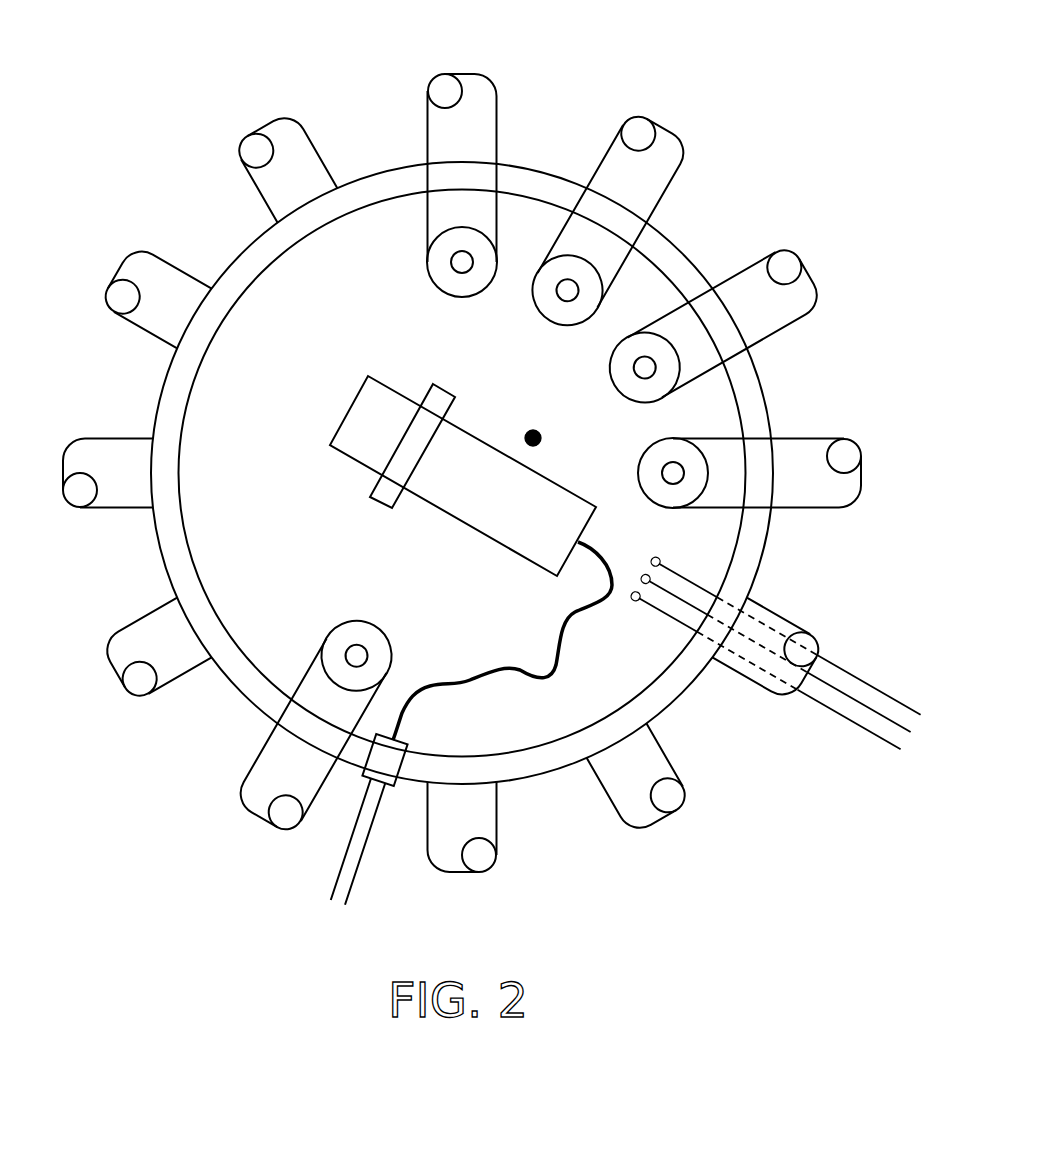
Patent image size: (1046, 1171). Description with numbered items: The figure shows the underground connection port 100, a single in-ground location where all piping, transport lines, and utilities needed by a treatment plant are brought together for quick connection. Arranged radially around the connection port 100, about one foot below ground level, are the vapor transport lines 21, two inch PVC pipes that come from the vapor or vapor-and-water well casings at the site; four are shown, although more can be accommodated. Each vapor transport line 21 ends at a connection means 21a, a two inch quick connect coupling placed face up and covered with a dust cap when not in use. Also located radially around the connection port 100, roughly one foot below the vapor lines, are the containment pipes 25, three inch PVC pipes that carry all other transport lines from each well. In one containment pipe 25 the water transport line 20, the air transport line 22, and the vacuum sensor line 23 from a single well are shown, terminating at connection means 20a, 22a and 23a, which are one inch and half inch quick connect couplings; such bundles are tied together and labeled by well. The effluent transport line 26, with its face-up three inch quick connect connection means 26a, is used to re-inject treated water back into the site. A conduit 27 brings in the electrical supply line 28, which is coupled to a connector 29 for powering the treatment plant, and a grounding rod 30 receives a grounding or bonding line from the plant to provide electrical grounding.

The connection port 100 is at (537, 167).
The vapor transport lines 21 is at (478, 73).
The connection means 21a is at (458, 297).
The containment pipes 25 is at (277, 119).
The effluent transport line 26 is at (283, 830).
The connection means 26a is at (358, 622).
The conduit 27 is at (368, 848).
The electrical supply line 28 is at (503, 670).
The connector 29 is at (460, 523).
The grounding rod 30 is at (542, 438).
The water transport line 20 is at (855, 680).
The air transport line 22 is at (868, 710).
The vacuum sensor line 23 is at (885, 745).
The connection means 20a is at (661, 558).
The connection means 22a is at (652, 600).
The connection means 23a is at (633, 600).